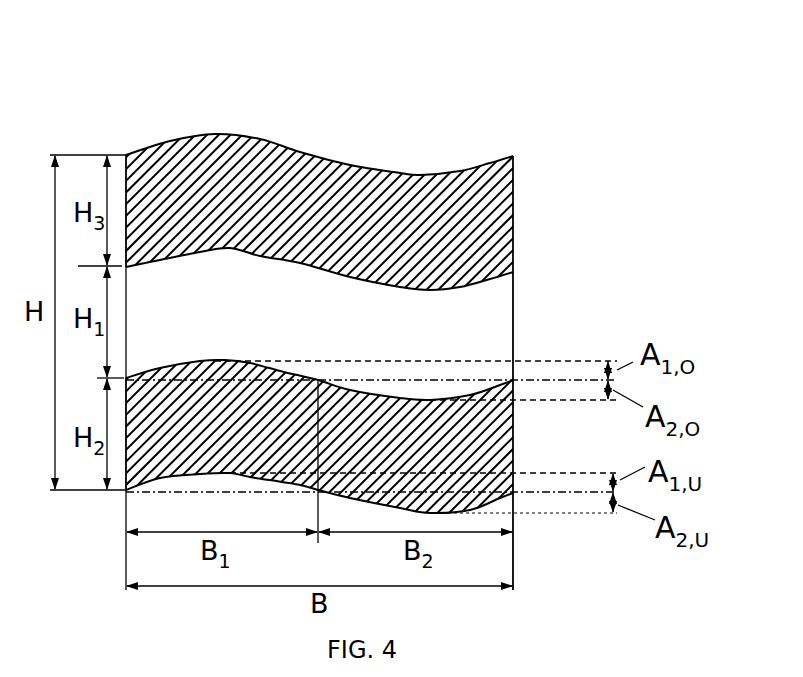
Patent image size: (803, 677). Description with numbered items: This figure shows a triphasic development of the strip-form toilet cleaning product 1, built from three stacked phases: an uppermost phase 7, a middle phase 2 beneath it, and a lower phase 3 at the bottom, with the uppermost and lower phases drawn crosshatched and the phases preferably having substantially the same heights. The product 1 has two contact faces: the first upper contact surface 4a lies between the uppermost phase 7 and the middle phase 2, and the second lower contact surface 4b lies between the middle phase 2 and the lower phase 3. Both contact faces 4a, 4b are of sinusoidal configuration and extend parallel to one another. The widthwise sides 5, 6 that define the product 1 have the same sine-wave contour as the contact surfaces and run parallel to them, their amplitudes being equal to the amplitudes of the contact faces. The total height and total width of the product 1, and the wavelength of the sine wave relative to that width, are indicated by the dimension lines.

The toilet cleaning product 1 is at (550, 108).
The middle phase 2 is at (490, 323).
The lower phase 3 is at (126, 490).
The first upper contact surface 4a is at (213, 358).
The second lower contact surface 4b is at (387, 280).
The widthwise side 5 is at (434, 175).
The widthwise side 6 is at (497, 503).
The uppermost phase 7 is at (488, 238).